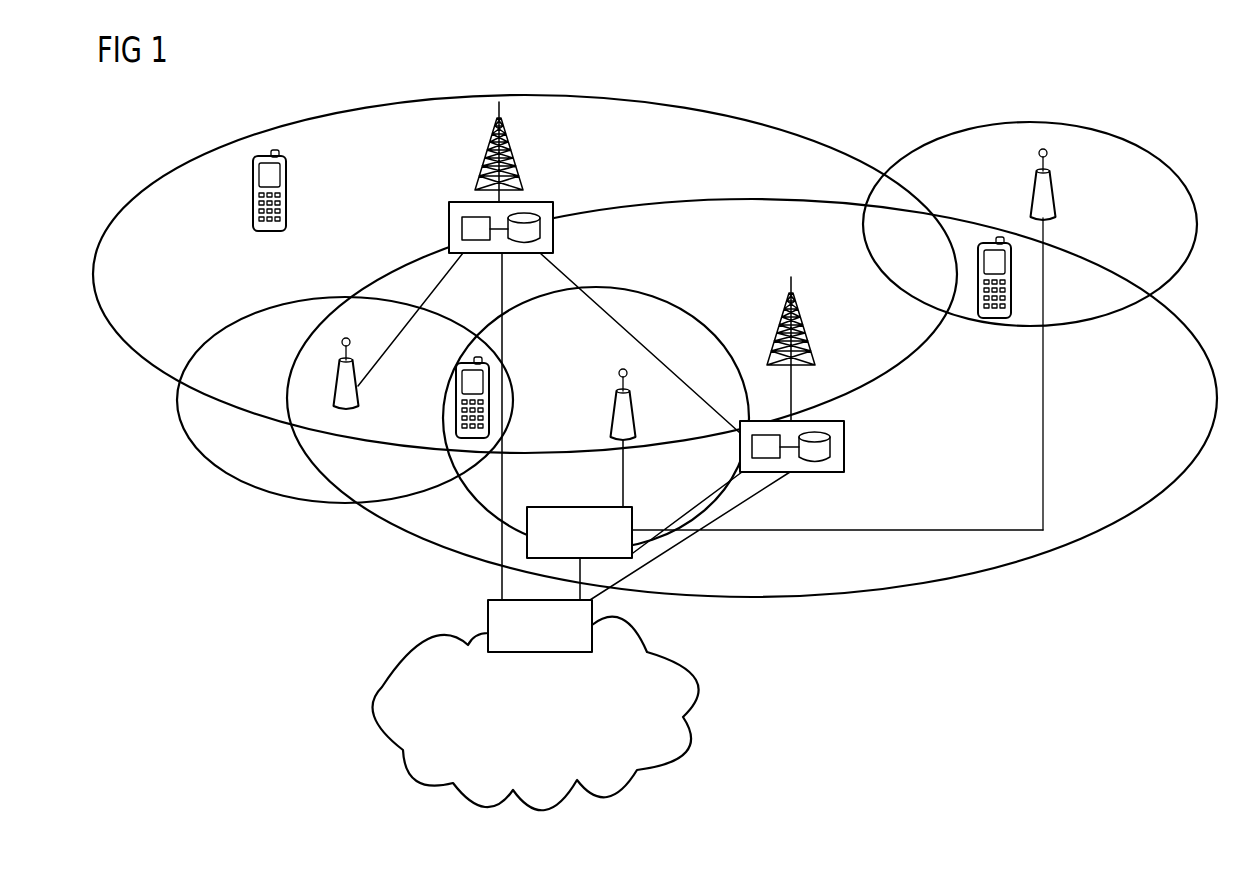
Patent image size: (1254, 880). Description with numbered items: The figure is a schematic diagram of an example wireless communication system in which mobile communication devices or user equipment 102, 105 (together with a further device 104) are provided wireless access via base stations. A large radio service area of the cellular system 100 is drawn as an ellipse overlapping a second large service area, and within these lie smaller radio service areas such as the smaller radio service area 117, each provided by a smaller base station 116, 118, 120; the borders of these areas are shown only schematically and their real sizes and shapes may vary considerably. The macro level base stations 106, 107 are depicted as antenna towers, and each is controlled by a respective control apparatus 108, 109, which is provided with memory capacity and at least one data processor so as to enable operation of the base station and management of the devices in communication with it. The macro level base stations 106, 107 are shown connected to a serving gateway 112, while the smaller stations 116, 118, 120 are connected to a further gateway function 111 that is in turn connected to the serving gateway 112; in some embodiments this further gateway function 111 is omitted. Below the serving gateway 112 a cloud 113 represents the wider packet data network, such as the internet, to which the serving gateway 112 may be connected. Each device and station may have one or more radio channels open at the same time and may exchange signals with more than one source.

The cellular system radio service area 100 is at (175, 150).
The mobile communication device 102 is at (252, 196).
The mobile terminal 104 is at (453, 401).
The mobile communication device 105 is at (994, 320).
The macro level base station 106 is at (486, 152).
The macro level base station 107 is at (800, 328).
The control apparatus 108 is at (449, 222).
The control apparatus 109 is at (845, 446).
The further gateway function 111 is at (633, 511).
The serving gateway 112 is at (488, 618).
The network 113 is at (375, 713).
The base station 116 is at (1028, 122).
The smaller radio service area 117 is at (672, 292).
The base station 118 is at (635, 416).
The base station 120 is at (360, 382).